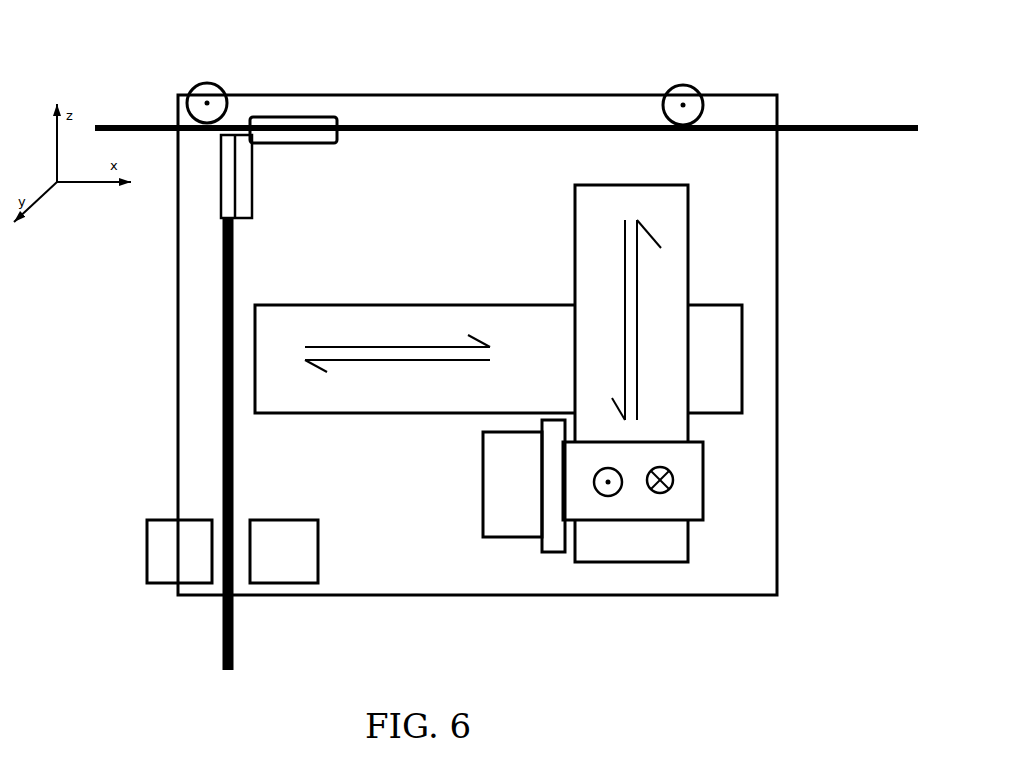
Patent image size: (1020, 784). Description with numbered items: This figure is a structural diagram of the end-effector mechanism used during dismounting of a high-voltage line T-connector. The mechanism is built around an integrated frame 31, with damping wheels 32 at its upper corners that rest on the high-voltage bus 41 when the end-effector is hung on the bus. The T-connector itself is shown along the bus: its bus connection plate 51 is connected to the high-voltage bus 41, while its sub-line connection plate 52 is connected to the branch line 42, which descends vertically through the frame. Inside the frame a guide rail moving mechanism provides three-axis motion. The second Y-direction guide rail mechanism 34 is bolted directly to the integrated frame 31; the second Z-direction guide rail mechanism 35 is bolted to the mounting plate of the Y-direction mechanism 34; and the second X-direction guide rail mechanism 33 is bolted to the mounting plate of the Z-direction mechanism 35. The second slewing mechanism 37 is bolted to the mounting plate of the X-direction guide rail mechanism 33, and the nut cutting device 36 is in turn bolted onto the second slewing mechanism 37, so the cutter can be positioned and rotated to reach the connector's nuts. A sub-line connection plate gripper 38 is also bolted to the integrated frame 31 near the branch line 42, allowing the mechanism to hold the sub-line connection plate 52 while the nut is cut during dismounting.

The integrated frame 31 is at (405, 155).
The damping wheels 32 is at (700, 98).
The second X-direction guide rail mechanism 33 is at (630, 492).
The second Y-direction guide rail mechanism 34 is at (535, 370).
The second Z-direction guide rail mechanism 35 is at (613, 277).
The nut cutting device 36 is at (517, 497).
The second slewing mechanism 37 is at (557, 497).
The sub-line connection plate gripper 38 is at (170, 548).
The high-voltage bus 41 is at (155, 125).
The branch line 42 is at (222, 267).
The bus connection plate 51 is at (297, 120).
The sub-line connection plate 52 is at (242, 167).